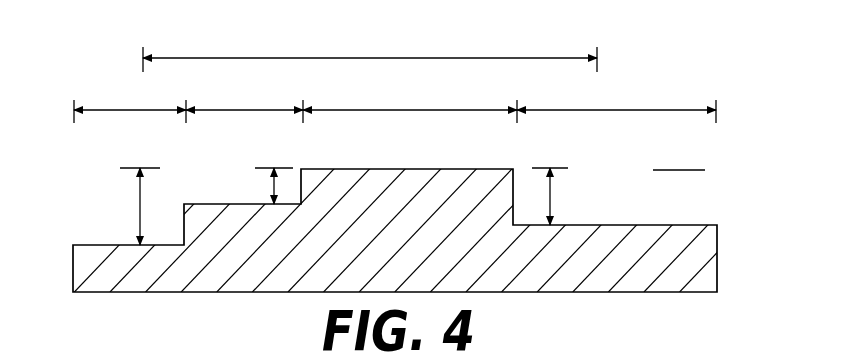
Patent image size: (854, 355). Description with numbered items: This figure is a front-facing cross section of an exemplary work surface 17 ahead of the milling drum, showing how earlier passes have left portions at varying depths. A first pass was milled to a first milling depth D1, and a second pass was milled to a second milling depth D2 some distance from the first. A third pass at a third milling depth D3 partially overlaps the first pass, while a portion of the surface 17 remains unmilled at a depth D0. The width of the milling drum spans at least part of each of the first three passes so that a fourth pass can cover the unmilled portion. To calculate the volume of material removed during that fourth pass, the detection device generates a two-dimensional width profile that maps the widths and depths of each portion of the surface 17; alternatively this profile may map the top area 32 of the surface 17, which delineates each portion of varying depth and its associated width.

The surface 17 is at (405, 169).
The top area 32 is at (412, 134).
The depth of unmilled portion D0 is at (701, 154).
The first milling depth D1 is at (272, 192).
The second milling depth D2 is at (552, 198).
The third milling depth D3 is at (138, 218).